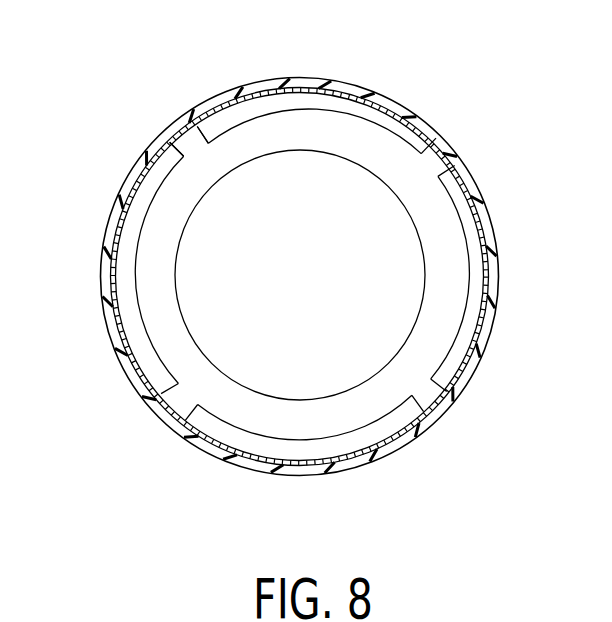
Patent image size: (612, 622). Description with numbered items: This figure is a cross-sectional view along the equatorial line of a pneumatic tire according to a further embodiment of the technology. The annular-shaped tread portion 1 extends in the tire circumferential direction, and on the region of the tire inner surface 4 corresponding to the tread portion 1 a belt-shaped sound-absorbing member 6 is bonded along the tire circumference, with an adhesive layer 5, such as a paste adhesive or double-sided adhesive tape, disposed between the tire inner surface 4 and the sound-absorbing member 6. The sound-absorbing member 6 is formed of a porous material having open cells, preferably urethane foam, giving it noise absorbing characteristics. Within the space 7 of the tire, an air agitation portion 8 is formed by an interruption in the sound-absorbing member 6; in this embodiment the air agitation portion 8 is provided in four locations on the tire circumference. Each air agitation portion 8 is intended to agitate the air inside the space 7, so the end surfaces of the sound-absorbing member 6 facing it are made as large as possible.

The tread portion 1 is at (405, 104).
The tire inner surface 4 is at (168, 152).
The adhesive layer 5 is at (299, 92).
The sound-absorbing member 6 is at (333, 106).
The space 7 is at (450, 222).
The air agitation portion 8 is at (193, 128).